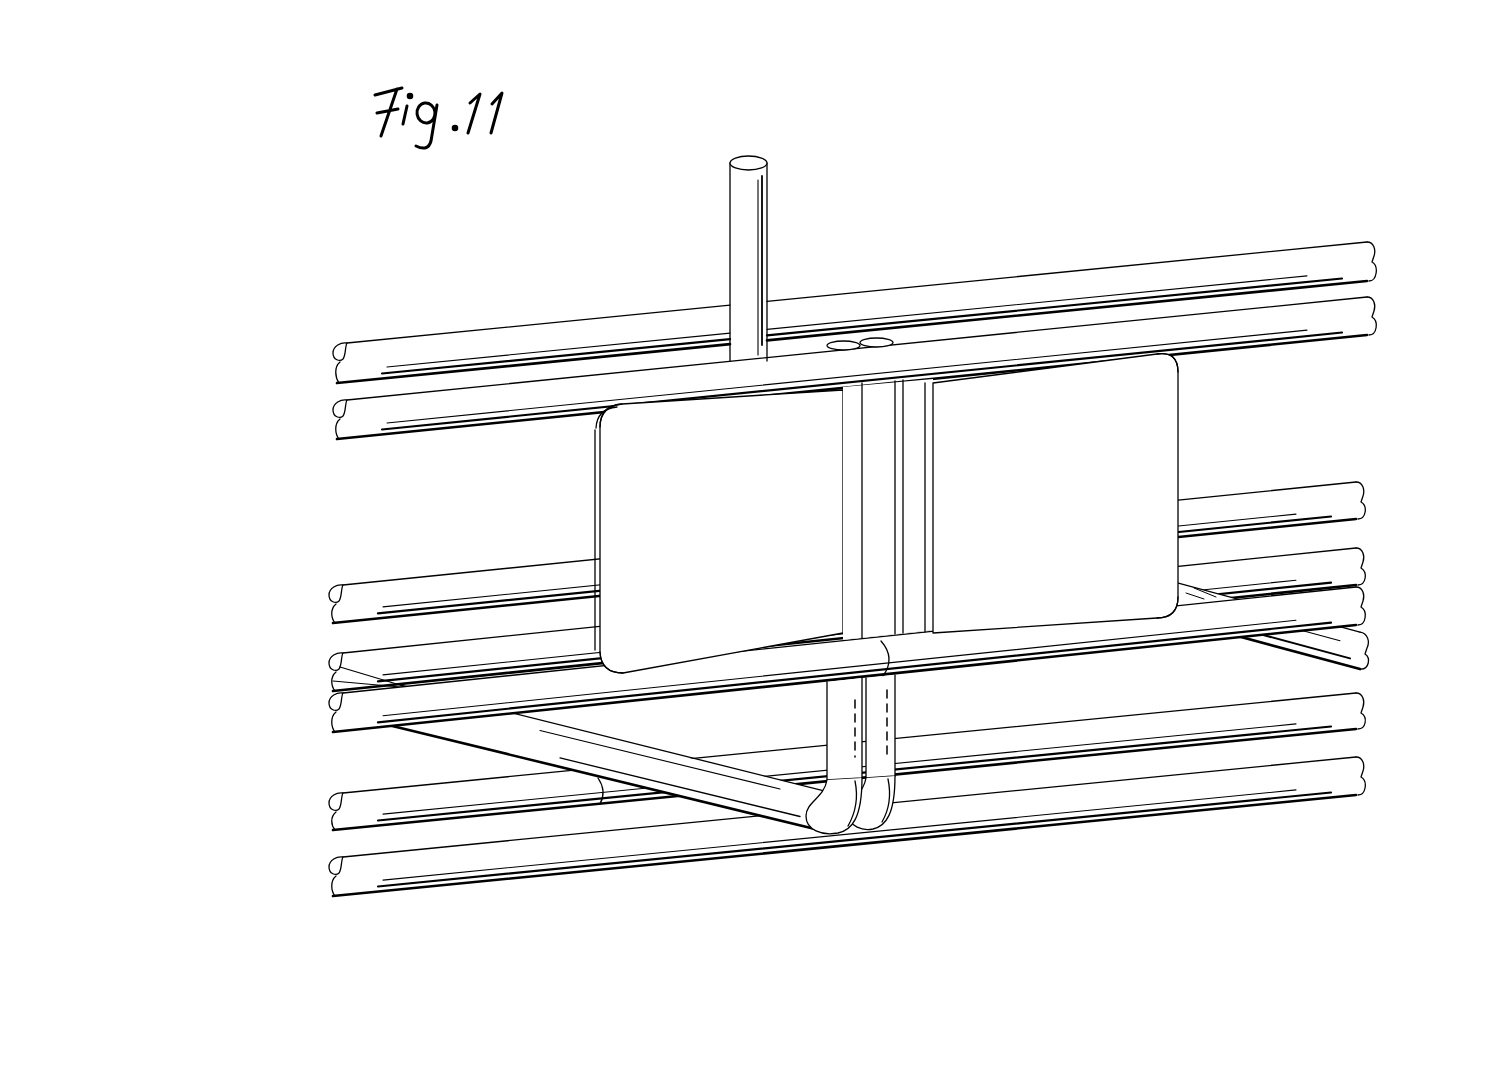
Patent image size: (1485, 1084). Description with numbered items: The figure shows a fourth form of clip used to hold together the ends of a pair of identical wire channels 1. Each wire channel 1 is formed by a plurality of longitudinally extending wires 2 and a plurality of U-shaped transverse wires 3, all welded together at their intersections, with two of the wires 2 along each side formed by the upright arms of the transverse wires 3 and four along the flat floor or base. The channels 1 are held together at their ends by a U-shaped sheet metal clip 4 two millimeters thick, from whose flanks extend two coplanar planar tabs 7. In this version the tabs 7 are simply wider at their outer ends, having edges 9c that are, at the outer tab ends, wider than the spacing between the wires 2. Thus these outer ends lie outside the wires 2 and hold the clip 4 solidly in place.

The wire channel 1 is at (284, 825).
The longitudinally extending wire 2 is at (682, 385).
The U-shaped transverse wire 3 is at (837, 707).
The sheet metal clip 4 is at (900, 427).
The planar tab 7 is at (697, 523).
The edge 9c is at (1246, 833).